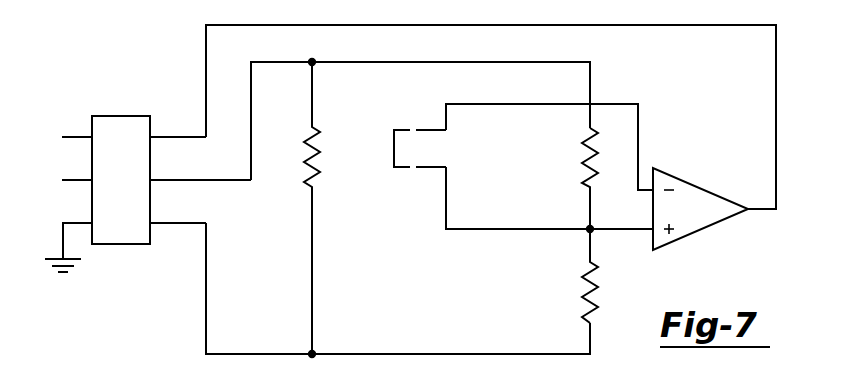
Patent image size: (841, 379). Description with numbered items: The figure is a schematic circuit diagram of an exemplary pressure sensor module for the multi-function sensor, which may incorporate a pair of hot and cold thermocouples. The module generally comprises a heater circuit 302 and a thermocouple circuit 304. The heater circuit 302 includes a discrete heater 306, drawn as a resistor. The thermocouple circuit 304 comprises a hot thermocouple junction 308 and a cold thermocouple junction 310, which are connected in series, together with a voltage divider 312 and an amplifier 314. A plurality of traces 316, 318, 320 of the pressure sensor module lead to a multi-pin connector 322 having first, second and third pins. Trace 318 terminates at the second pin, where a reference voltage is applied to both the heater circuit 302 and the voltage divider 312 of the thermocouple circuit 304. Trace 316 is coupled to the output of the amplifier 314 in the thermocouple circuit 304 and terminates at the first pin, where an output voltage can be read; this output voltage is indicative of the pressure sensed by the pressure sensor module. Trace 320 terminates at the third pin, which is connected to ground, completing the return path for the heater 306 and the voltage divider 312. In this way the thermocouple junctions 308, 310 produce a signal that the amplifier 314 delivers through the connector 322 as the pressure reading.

The heater circuit 302 is at (290, 223).
The thermocouple circuit 304 is at (618, 100).
The discrete heater 306 is at (306, 165).
The hot thermocouple junction 308 is at (414, 130).
The cold thermocouple junction 310 is at (414, 169).
The voltage divider 312 is at (619, 268).
The amplifier 314 is at (697, 180).
The trace 316 is at (206, 38).
The trace 318 is at (251, 90).
The trace 320 is at (206, 315).
The multi-pin connector 322 is at (110, 116).